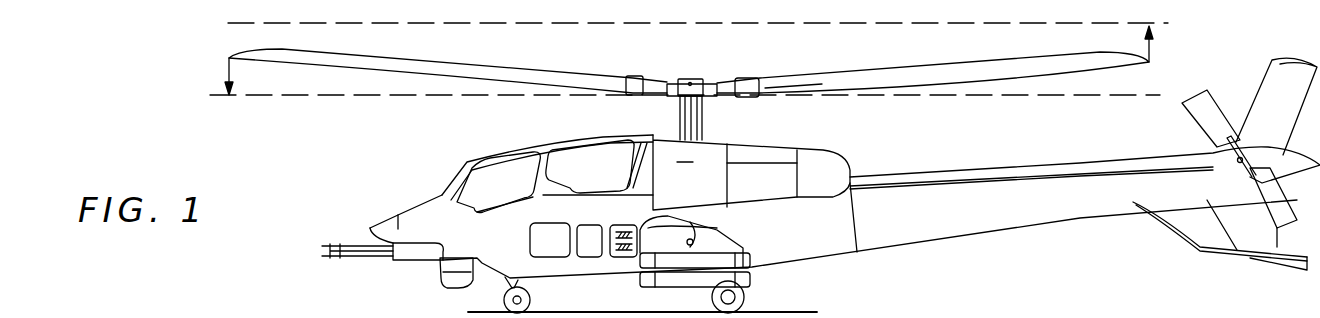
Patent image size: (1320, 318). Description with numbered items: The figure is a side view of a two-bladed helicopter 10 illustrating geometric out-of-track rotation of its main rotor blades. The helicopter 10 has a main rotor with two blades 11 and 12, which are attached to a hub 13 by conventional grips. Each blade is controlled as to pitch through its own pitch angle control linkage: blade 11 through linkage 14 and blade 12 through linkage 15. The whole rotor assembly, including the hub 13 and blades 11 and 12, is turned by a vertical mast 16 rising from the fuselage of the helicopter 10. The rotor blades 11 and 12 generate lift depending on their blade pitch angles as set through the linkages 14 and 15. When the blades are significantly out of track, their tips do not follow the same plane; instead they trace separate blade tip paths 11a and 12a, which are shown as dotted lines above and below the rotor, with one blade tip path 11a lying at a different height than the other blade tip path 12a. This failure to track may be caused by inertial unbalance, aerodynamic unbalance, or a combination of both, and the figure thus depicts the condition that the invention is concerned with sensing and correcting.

The helicopter 10 is at (463, 173).
The rotor blade 11 is at (388, 65).
The blade tip path 11a is at (318, 97).
The rotor blade 12 is at (1047, 65).
The blade tip path 12a is at (927, 26).
The hub 13 is at (692, 81).
The pitch angle control linkage 14 is at (680, 113).
The pitch angle control linkage 15 is at (703, 113).
The vertical mast 16 is at (690, 125).